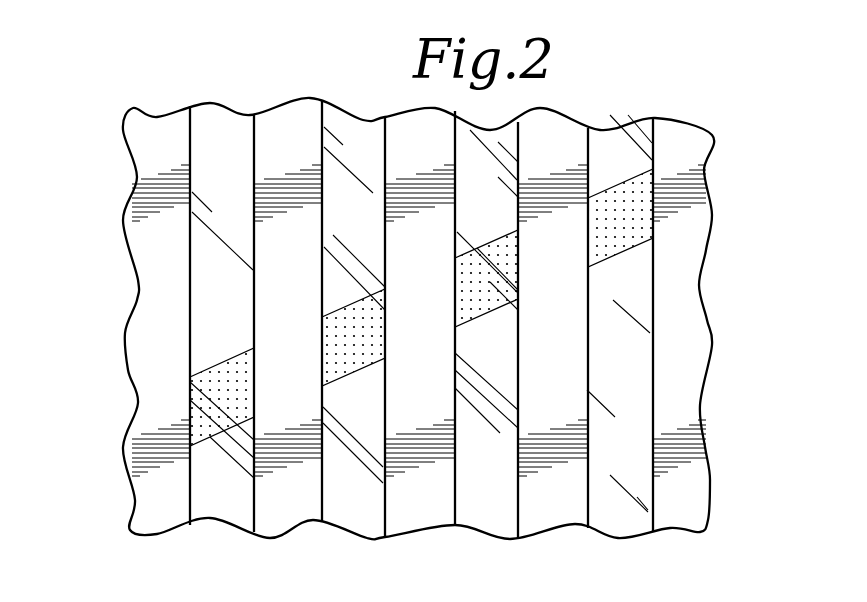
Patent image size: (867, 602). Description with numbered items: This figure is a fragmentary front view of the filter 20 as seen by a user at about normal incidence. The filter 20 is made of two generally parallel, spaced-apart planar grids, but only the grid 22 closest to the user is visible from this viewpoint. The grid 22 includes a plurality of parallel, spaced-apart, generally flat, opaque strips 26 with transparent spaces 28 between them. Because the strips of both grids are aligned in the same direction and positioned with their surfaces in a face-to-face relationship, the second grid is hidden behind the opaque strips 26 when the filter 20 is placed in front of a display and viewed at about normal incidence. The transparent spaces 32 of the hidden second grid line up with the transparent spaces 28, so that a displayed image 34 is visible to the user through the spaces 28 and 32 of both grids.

The filter 20 is at (624, 100).
The grid 22 is at (627, 389).
The opaque strips 26 is at (423, 545).
The transparent spaces 28 is at (244, 512).
The transparent spaces 32 is at (214, 138).
The displayed image 34 is at (208, 374).